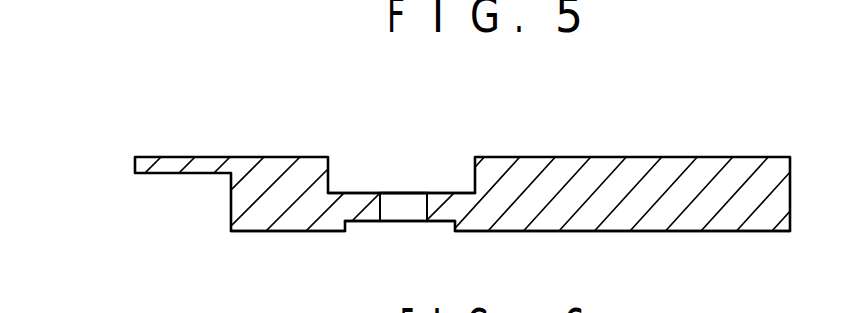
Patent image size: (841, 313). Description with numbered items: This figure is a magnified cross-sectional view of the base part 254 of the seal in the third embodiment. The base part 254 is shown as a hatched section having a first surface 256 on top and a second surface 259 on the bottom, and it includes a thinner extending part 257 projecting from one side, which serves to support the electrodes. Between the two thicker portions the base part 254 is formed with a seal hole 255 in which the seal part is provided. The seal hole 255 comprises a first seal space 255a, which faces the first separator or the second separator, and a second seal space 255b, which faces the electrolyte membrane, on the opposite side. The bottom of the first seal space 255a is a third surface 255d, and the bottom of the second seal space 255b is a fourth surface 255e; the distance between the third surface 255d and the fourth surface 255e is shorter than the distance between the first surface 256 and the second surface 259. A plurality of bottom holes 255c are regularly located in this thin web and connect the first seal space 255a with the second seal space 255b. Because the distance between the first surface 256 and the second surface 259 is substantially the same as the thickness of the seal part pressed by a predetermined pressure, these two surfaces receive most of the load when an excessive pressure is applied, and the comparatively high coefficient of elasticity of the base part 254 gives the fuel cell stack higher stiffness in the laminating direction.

The base part 254 is at (583, 103).
The seal hole 255 is at (382, 189).
The first seal space 255a is at (443, 175).
The second seal space 255b is at (438, 228).
The bottom hole 255c is at (395, 210).
The third surface 255d is at (350, 192).
The fourth surface 255e is at (347, 231).
The first surface 256 is at (267, 157).
The extending part 257 is at (158, 157).
The second surface 259 is at (250, 232).